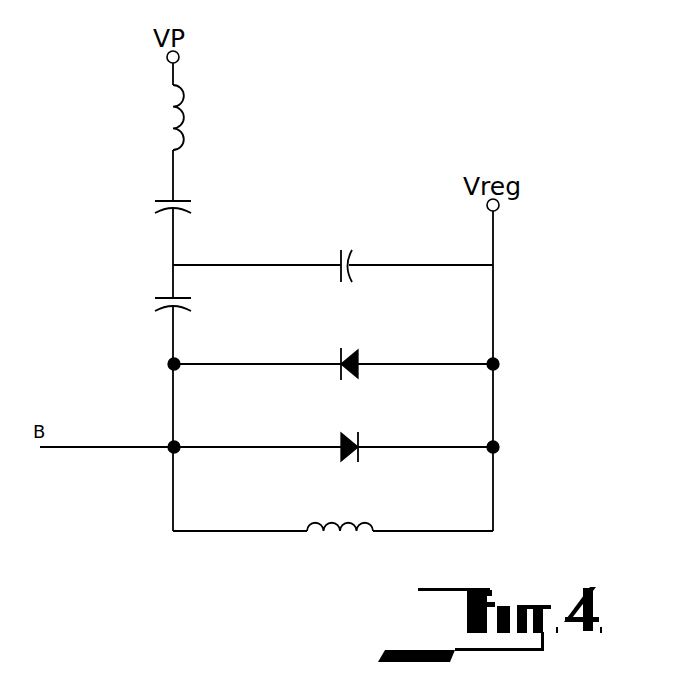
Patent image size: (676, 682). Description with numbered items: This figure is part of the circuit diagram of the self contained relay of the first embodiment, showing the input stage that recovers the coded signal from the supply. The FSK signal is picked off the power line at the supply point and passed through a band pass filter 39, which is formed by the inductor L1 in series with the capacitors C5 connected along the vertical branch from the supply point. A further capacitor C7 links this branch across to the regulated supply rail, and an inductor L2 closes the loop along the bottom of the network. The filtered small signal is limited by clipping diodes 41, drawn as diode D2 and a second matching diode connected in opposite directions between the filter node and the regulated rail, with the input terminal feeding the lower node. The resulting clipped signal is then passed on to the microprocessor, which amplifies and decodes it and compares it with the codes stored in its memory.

The band pass filter 39 is at (138, 242).
The clipping diodes 41 is at (505, 408).
The inductor L1 is at (197, 117).
The capacitor C5 is at (167, 254).
The capacitor C7 is at (333, 237).
The diode D2 is at (333, 381).
The inductor L2 is at (338, 517).